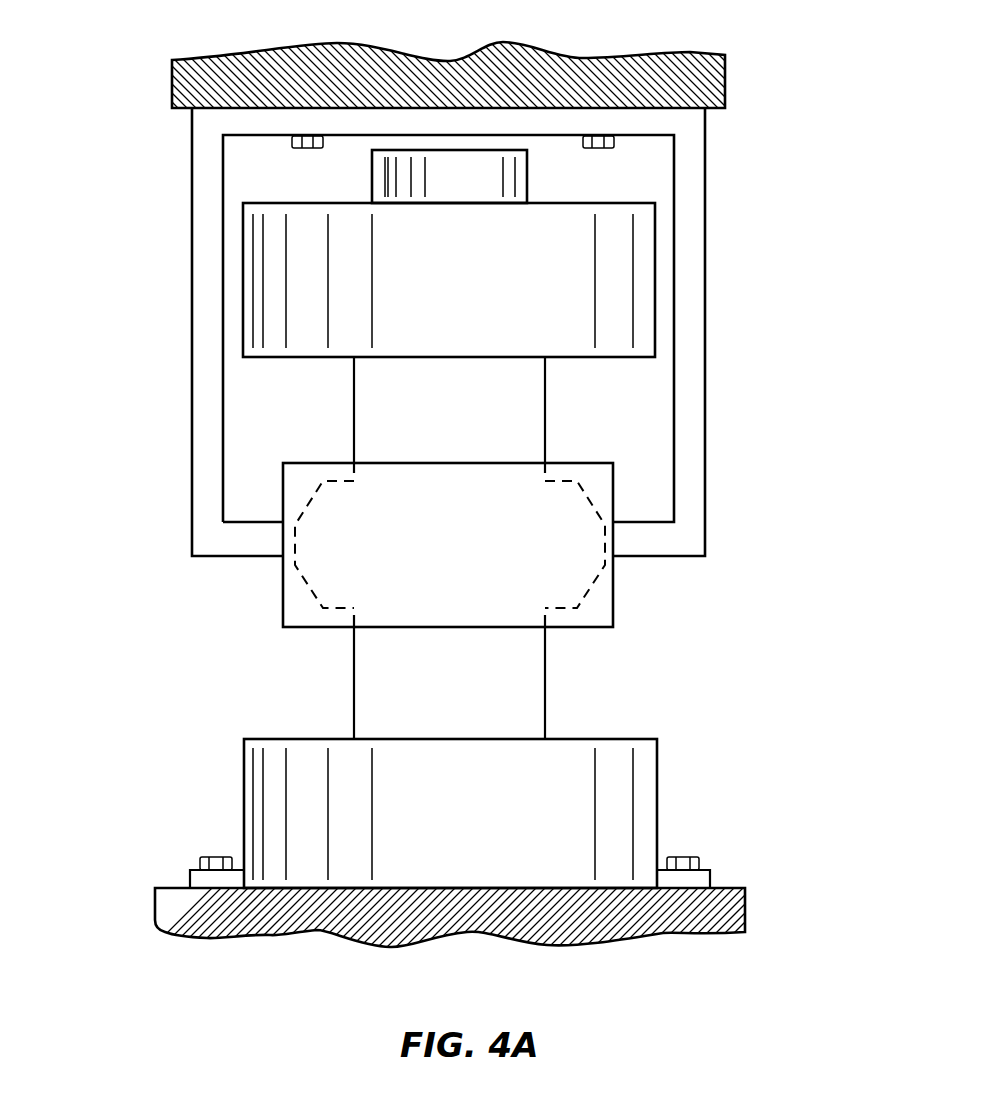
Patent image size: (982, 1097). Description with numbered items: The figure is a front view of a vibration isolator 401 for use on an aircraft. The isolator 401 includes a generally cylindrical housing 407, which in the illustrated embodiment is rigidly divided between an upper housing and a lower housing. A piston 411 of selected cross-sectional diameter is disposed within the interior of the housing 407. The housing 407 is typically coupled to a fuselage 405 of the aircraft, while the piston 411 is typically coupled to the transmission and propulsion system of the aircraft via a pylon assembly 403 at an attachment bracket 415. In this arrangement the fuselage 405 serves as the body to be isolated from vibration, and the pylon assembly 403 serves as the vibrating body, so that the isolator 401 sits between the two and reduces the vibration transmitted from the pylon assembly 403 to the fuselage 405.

The vibration isolator 401 is at (142, 178).
The pylon assembly 403 is at (172, 86).
The fuselage 405 is at (155, 908).
The housing 407 is at (243, 305).
The piston 411 is at (595, 583).
The attachment bracket 415 is at (705, 403).